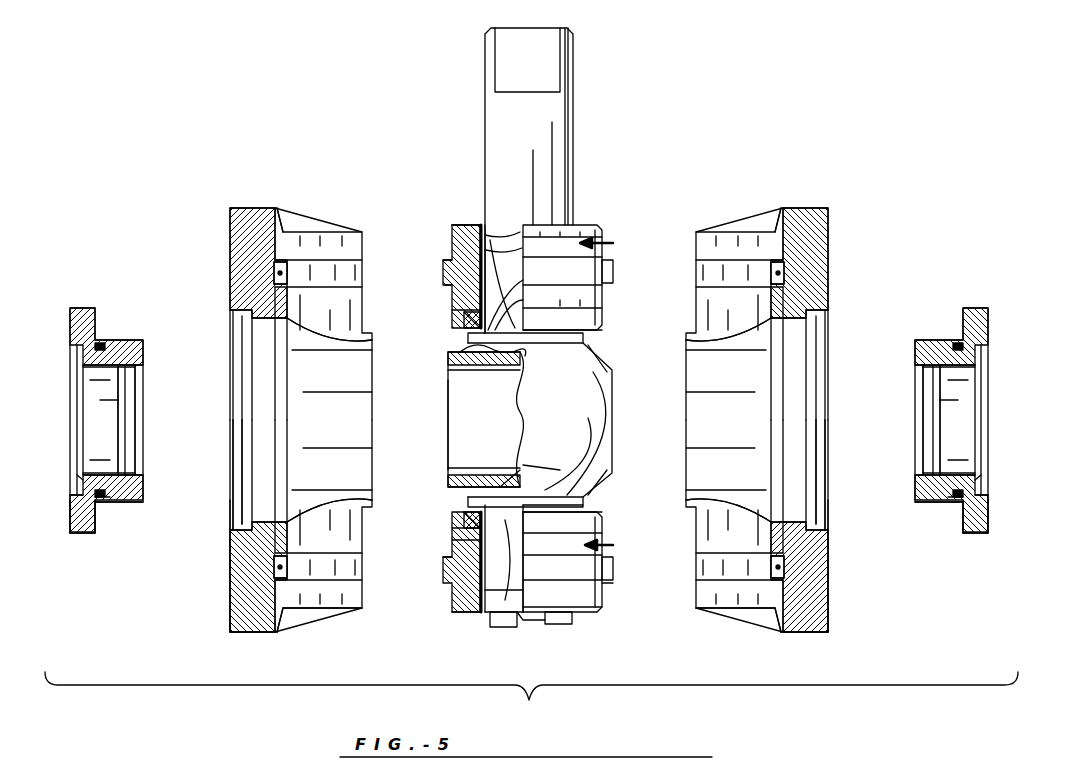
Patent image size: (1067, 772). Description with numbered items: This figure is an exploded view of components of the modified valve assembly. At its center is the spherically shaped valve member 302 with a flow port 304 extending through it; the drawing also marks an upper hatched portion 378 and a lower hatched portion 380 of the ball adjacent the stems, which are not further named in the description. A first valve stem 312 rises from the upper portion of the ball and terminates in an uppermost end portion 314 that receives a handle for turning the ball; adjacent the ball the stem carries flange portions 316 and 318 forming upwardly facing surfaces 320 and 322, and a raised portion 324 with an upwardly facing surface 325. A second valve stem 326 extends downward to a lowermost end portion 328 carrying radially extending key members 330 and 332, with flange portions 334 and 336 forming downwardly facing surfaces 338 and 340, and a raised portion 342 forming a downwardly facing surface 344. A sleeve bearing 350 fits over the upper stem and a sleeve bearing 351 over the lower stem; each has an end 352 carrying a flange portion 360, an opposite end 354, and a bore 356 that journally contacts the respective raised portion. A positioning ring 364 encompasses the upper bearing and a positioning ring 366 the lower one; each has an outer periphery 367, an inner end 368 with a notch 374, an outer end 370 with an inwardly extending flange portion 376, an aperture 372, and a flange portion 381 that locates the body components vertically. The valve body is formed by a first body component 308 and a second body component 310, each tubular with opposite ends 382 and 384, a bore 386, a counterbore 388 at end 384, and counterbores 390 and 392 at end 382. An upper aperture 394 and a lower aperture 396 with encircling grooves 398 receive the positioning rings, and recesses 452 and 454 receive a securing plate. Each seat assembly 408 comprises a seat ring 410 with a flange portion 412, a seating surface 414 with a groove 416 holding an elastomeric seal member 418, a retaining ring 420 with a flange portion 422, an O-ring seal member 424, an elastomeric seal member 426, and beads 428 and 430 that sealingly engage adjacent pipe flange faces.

The valve member 302 is at (605, 440).
The flow port 304 is at (450, 462).
The first body component 308 is at (235, 592).
The second body component 310 is at (823, 595).
The first valve stem 312 is at (567, 130).
The uppermost end portion 314 is at (548, 75).
The flange portion 316 is at (525, 295).
The flange portion 318 is at (545, 340).
The upwardly facing surface 320 is at (525, 320).
The upwardly facing surface 322 is at (490, 368).
The raised portion 324 is at (490, 228).
The upwardly facing surface 325 is at (500, 240).
The second valve stem 326 is at (500, 625).
The lowermost end portion 328 is at (525, 612).
The key member 330 is at (508, 628).
The key member 332 is at (572, 623).
The flange portion 334 is at (540, 482).
The flange portion 336 is at (525, 548).
The downwardly facing surface 338 is at (525, 525).
The downwardly facing surface 340 is at (455, 540).
The raised portion 342 is at (490, 592).
The downwardly facing surface 344 is at (538, 618).
The sleeve bearing 350 is at (462, 237).
The sleeve bearing 351 is at (450, 555).
The end 352 is at (525, 272).
The end 354 is at (470, 228).
The bore 356 is at (525, 247).
The flange portion 360 is at (455, 312).
The positioning ring 364 is at (613, 243).
The positioning ring 366 is at (613, 545).
The outer periphery 367 is at (450, 292).
The inner end 368 is at (605, 332).
The outer end 370 is at (600, 226).
The aperture 372 is at (450, 252).
The notch 374 is at (465, 322).
The flange portion 376 is at (480, 230).
The ball top edge 378 is at (465, 350).
The ball lower hatched portion 380 is at (470, 480).
The flange portion 381 is at (444, 270).
The end 382 is at (230, 575).
The end 384 is at (362, 616).
The bore 386 is at (265, 345).
The counterbore 388 is at (290, 523).
The counterbore 390 is at (242, 525).
The counterbore 392 is at (233, 515).
The aperture 394 is at (292, 250).
The aperture 396 is at (290, 627).
The groove 398 is at (275, 272).
The seat assembly 408 is at (120, 300).
The seat ring 410 is at (120, 502).
The flange portion 412 is at (97, 470).
The seating surface 414 is at (135, 490).
The groove 416 is at (110, 470).
The elastomeric seal member 418 is at (118, 483).
The retaining ring 420 is at (80, 505).
The flange portion 422 is at (98, 505).
The O-ring seal member 424 is at (100, 500).
The elastomeric seal member 426 is at (78, 480).
The bead 428 is at (78, 492).
The elastomeric bead 430 is at (72, 530).
The recess 452 is at (230, 628).
The recess 454 is at (828, 628).